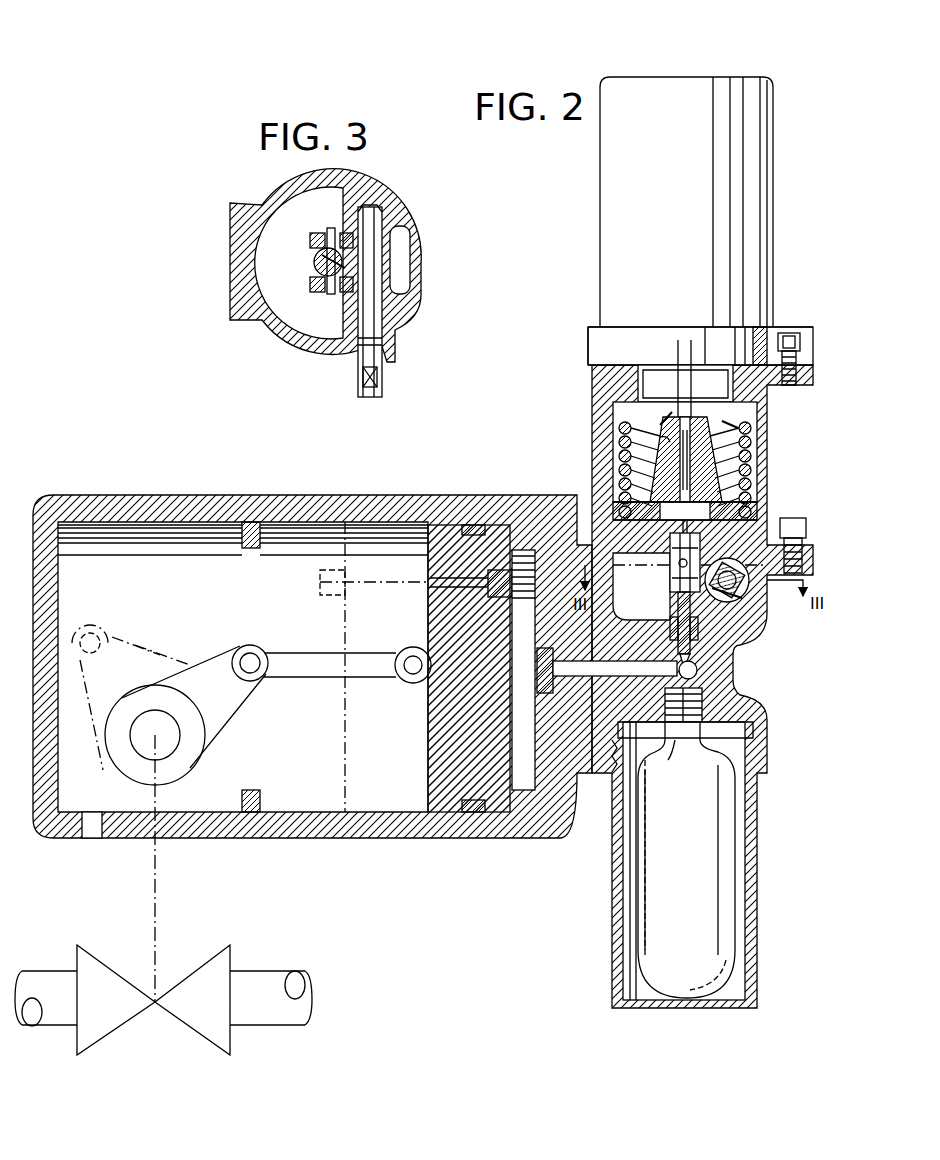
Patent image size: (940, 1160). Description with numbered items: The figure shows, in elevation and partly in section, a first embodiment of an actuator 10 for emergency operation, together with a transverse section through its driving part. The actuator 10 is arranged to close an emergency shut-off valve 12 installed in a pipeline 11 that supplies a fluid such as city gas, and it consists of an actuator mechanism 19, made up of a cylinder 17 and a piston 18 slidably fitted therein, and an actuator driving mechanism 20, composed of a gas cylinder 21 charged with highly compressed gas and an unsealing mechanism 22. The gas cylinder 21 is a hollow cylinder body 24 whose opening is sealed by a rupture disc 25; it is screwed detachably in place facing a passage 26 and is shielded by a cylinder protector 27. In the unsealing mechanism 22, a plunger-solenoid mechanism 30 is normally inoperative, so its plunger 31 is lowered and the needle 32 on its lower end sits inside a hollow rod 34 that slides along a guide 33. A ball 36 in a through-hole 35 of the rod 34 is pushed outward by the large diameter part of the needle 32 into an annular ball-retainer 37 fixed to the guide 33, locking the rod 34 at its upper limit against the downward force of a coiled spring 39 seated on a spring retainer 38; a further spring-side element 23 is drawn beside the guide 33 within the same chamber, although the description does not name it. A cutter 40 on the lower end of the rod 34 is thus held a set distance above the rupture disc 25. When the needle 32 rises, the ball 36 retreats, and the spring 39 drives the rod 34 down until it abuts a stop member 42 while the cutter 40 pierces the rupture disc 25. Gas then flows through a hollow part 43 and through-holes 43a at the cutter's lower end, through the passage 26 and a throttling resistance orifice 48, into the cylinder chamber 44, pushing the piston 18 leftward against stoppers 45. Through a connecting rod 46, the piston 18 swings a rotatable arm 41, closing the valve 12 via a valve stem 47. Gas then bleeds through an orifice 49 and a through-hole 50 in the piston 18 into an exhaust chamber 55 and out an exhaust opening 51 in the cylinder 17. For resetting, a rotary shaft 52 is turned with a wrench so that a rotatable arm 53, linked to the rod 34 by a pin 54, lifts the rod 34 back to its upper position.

In FIG. 2, the actuator 10 is at (511, 402).
In FIG. 2, the pipeline 11 is at (270, 975).
In FIG. 2, the emergency shut-off valve 12 is at (210, 968).
In FIG. 2, the cylinder 17 is at (380, 838).
In FIG. 2, the piston 18 is at (472, 812).
In FIG. 2, the actuator mechanism 19 is at (328, 497).
In FIG. 2, the actuator driving mechanism 20 is at (793, 325).
In FIG. 3, the actuator driving mechanism 20 is at (247, 181).
In FIG. 2, the gas cylinder 21 is at (740, 815).
In FIG. 2, the unsealing mechanism 22 is at (776, 410).
In FIG. 2, the spring 23 is at (620, 464).
In FIG. 2, the cylinder body 24 is at (722, 858).
In FIG. 2, the rupture disc 25 is at (688, 722).
In FIG. 2, the passage 26 is at (596, 700).
In FIG. 2, the cylinder protector 27 is at (757, 893).
In FIG. 2, the plunger-solenoid mechanism 30 is at (602, 195).
In FIG. 2, the plunger 31 is at (686, 340).
In FIG. 2, the needle 32 is at (662, 395).
In FIG. 2, the guide 33 is at (658, 484).
In FIG. 2, the rod 34 is at (703, 540).
In FIG. 3, the rod 34 is at (316, 262).
In FIG. 2, the through-hole 35 is at (662, 420).
In FIG. 2, the ball 36 is at (658, 436).
In FIG. 2, the ball-retainer 37 is at (747, 428).
In FIG. 2, the spring retainer 38 is at (650, 522).
In FIG. 2, the coiled spring 39 is at (752, 467).
In FIG. 2, the cutter 40 is at (690, 606).
In FIG. 2, the rotatable arm 41 is at (212, 722).
In FIG. 2, the stop member 42 is at (672, 626).
In FIG. 2, the hollow part 43 is at (706, 695).
In FIG. 2, the through-holes 43a is at (697, 665).
In FIG. 2, the cylinder chamber 44 is at (522, 545).
In FIG. 2, the stoppers 45 is at (250, 548).
In FIG. 2, the connecting rod 46 is at (312, 677).
In FIG. 2, the valve stem 47 is at (152, 920).
In FIG. 2, the throttling resistance orifice 48 is at (533, 658).
In FIG. 2, the throttling resistance orifice 49 is at (535, 556).
In FIG. 2, the through-hole 50 is at (432, 580).
In FIG. 2, the exhaust opening 51 is at (92, 838).
In FIG. 2, the rotary shaft 52 is at (735, 598).
In FIG. 3, the rotary shaft 52 is at (385, 322).
In FIG. 2, the rotatable arm 53 is at (745, 598).
In FIG. 3, the rotatable arm 53 is at (340, 292).
In FIG. 2, the pin 54 is at (670, 572).
In FIG. 3, the pin 54 is at (330, 230).
In FIG. 2, the exhaust chamber 55 is at (155, 535).